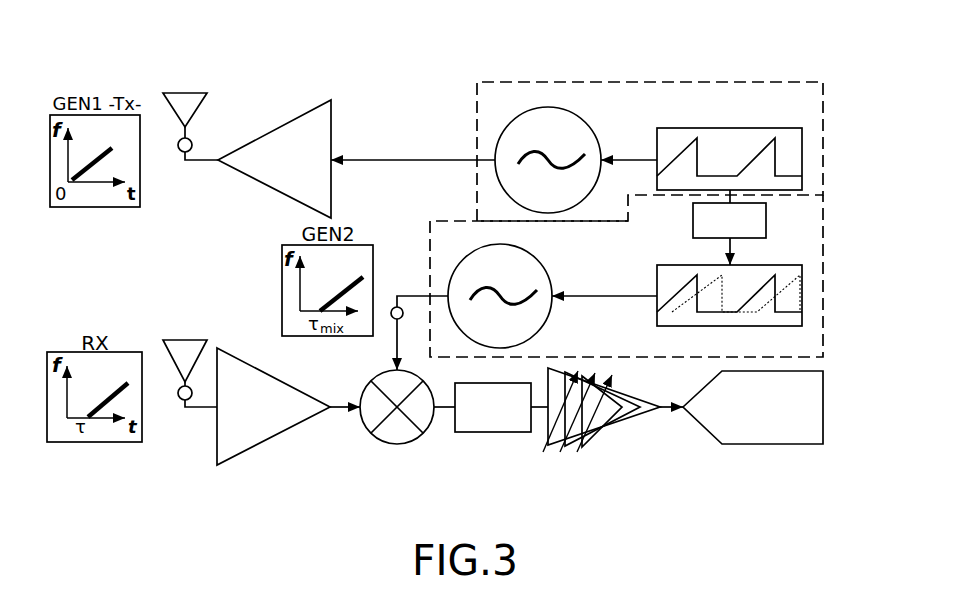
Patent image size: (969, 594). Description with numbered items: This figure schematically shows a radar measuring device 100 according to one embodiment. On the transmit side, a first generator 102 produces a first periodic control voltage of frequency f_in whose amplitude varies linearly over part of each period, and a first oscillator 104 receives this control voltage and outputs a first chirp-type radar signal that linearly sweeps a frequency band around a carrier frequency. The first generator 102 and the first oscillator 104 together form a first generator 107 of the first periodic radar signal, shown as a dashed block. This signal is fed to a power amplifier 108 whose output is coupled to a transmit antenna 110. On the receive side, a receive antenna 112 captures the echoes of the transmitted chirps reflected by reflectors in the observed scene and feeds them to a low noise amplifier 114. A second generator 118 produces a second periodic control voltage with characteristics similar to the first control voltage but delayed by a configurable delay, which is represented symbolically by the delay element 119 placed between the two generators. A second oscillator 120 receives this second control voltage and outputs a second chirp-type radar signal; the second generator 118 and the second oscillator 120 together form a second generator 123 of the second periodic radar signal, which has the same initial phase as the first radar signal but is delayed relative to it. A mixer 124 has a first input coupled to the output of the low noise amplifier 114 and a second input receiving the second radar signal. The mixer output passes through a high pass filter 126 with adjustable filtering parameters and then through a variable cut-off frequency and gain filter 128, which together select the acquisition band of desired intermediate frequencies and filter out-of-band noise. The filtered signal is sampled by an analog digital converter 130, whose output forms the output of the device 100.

The radar measuring device 100 is at (790, 46).
The first generator 102 is at (792, 160).
The first oscillator 104 is at (537, 117).
The first generator of a first periodic radar signal 107 is at (672, 82).
The power amplifier 108 is at (305, 125).
The transmit antenna 110 is at (183, 98).
The receive antenna 112 is at (187, 347).
The low noise amplifier 114 is at (243, 443).
The second generator 118 is at (792, 306).
The delay tau_mix element 119 is at (768, 222).
The second oscillator 120 is at (470, 265).
The second generator of a second periodic radar signal 123 is at (823, 260).
The mixer 124 is at (390, 435).
The high pass filter 126 is at (470, 425).
The variable cut-off frequency and gain filter 128 is at (618, 425).
The analog digital converter 130 is at (808, 398).